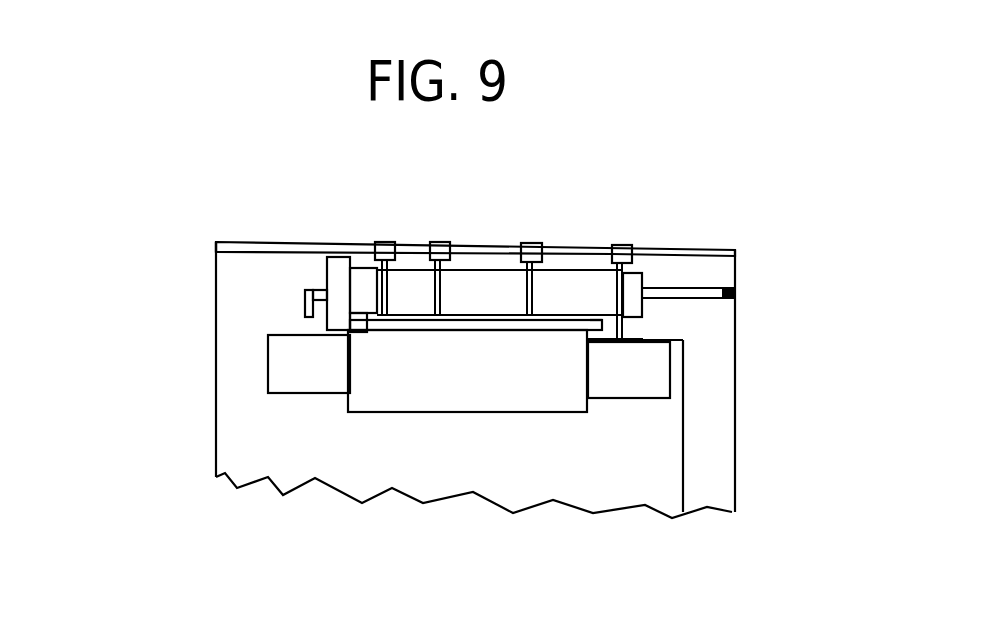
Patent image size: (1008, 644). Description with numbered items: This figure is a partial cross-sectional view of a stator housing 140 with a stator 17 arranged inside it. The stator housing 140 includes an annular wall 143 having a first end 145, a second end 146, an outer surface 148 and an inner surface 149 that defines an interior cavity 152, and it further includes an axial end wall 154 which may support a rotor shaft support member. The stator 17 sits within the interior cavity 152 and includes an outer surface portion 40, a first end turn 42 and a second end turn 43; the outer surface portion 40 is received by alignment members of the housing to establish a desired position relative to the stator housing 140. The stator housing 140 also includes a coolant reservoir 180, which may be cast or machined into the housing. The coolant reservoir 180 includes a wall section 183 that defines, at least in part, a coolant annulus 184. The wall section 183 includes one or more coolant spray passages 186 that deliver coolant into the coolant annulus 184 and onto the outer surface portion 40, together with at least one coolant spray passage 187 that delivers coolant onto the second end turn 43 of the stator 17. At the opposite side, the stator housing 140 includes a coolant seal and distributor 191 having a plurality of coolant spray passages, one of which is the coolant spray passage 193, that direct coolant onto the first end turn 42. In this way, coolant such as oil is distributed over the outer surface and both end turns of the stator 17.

The stator 17 is at (492, 395).
The outer surface portion 40 is at (477, 317).
The first end turn 42 is at (321, 380).
The second end turn 43 is at (642, 387).
The stator housing 140 is at (773, 480).
The annular wall 143 is at (302, 234).
The first end 145 is at (220, 247).
The second end 146 is at (722, 270).
The outer surface 148 is at (500, 245).
The inner surface 149 is at (652, 328).
The interior cavity 152 is at (172, 352).
The axial end wall 154 is at (710, 495).
The coolant reservoir 180 is at (403, 268).
The wall section 183 is at (375, 359).
The coolant annulus 184 is at (568, 327).
The coolant spray passages 186 is at (387, 296).
The coolant spray passage 187 is at (630, 287).
The coolant seal and distributor 191 is at (251, 259).
The coolant spray passage 193 is at (227, 286).